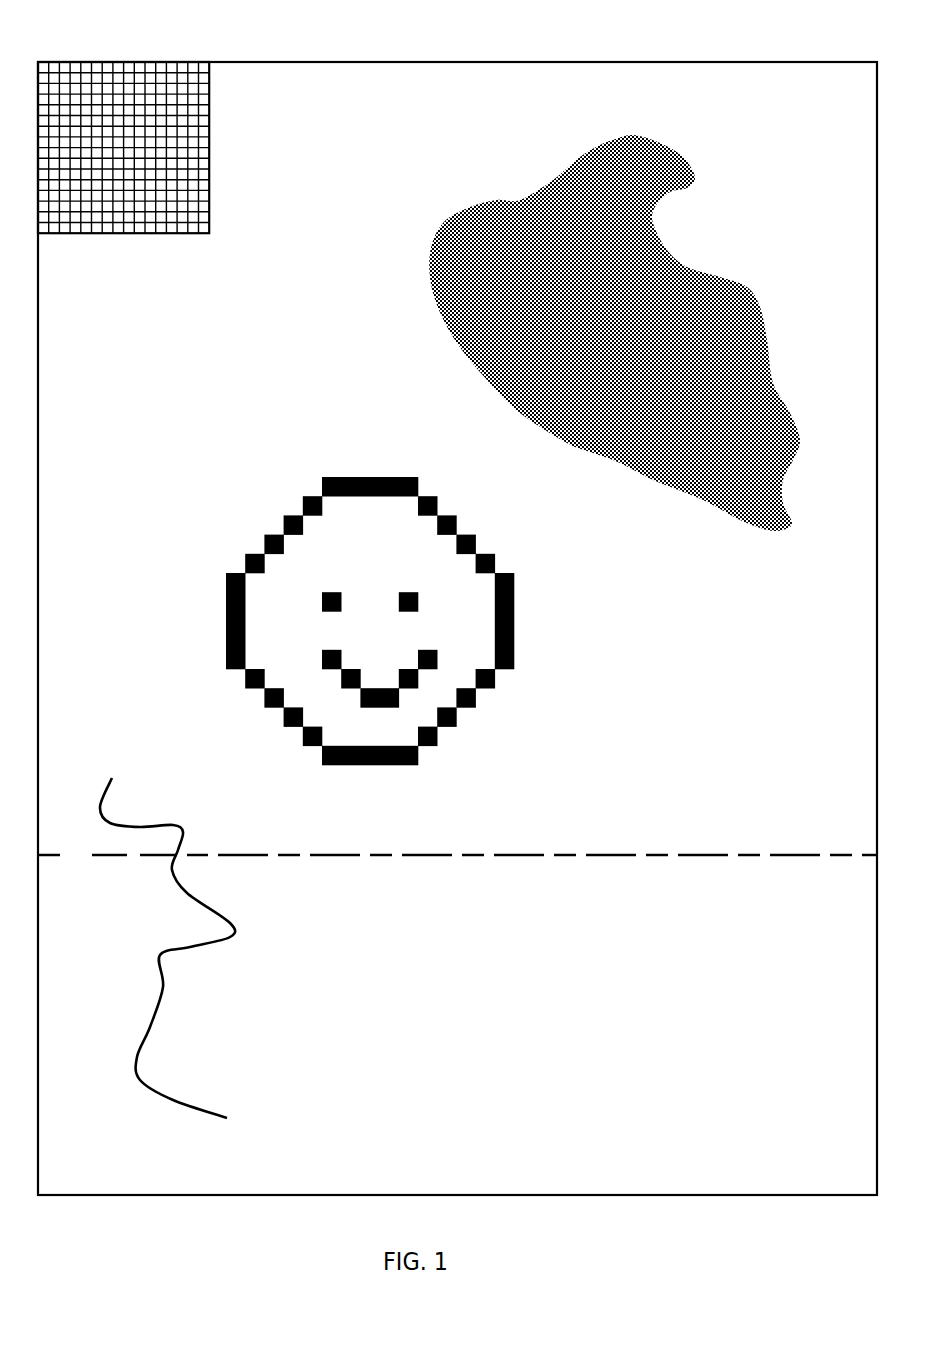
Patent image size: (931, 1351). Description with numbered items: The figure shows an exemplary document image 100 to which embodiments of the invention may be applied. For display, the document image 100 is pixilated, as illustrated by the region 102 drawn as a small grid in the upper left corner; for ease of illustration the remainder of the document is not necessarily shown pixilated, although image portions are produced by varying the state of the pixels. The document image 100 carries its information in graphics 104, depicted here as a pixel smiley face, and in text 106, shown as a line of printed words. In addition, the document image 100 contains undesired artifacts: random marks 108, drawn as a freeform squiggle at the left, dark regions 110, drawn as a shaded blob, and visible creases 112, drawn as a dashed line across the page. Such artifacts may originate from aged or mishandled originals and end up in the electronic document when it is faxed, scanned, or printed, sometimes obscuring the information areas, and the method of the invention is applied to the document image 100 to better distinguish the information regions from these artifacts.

The document image 100 is at (835, 1170).
The region 102 is at (82, 58).
The graphics 104 is at (515, 615).
The text 106 is at (582, 1007).
The random marks 108 is at (122, 822).
The dark regions 110 is at (633, 473).
The visible creases 112 is at (427, 855).